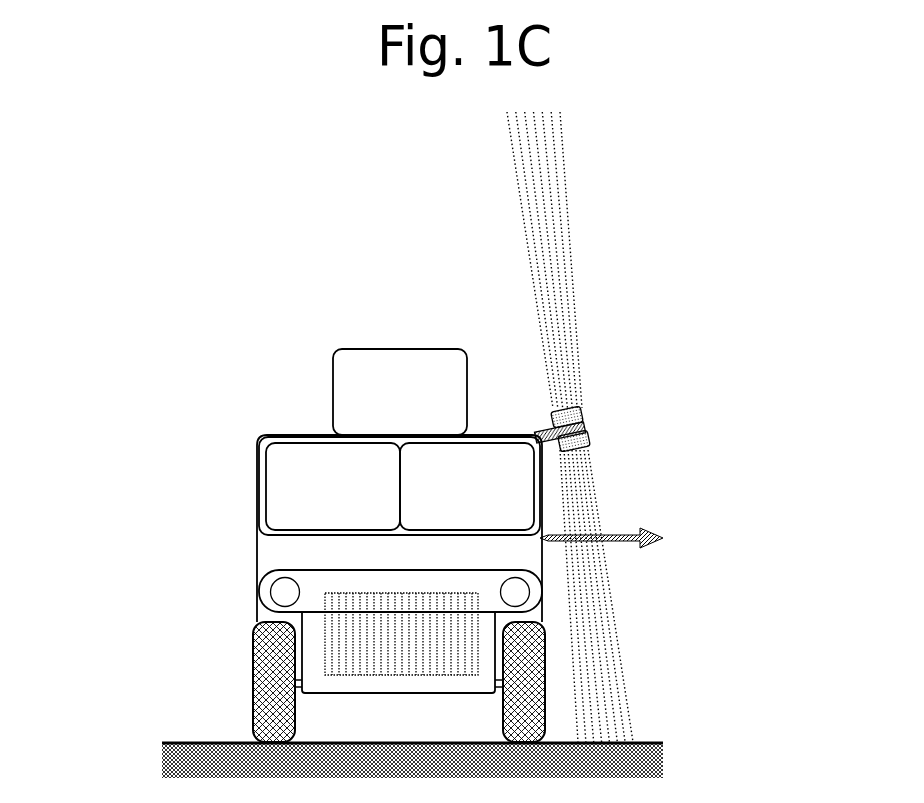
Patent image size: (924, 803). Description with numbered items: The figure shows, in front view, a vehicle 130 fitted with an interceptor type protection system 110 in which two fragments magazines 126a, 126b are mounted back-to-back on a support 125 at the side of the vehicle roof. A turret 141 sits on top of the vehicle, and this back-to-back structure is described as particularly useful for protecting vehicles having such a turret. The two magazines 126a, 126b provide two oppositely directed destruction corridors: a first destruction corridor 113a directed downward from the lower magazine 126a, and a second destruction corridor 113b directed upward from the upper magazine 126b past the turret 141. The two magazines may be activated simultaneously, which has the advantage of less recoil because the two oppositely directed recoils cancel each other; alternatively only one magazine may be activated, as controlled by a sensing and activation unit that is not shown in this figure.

The system 110 is at (514, 427).
The vehicle 130 is at (253, 550).
The turret 141 is at (333, 413).
The sensor mount 125 is at (585, 427).
The fragments magazine 126a is at (588, 442).
The fragments magazine 126b is at (583, 412).
The lower detection beam 113a is at (612, 600).
The upper detection beam 113b is at (572, 217).